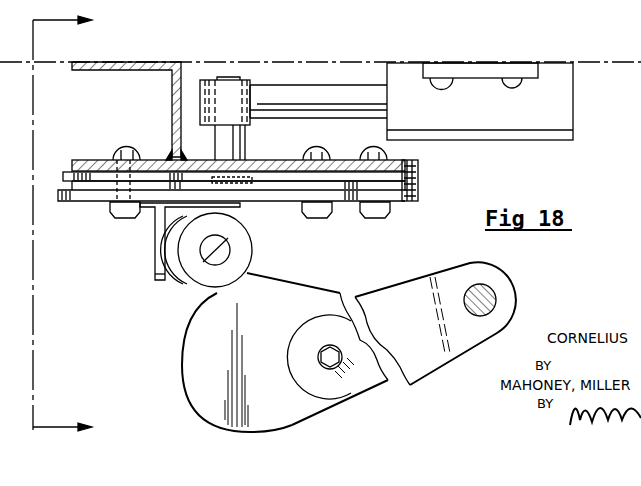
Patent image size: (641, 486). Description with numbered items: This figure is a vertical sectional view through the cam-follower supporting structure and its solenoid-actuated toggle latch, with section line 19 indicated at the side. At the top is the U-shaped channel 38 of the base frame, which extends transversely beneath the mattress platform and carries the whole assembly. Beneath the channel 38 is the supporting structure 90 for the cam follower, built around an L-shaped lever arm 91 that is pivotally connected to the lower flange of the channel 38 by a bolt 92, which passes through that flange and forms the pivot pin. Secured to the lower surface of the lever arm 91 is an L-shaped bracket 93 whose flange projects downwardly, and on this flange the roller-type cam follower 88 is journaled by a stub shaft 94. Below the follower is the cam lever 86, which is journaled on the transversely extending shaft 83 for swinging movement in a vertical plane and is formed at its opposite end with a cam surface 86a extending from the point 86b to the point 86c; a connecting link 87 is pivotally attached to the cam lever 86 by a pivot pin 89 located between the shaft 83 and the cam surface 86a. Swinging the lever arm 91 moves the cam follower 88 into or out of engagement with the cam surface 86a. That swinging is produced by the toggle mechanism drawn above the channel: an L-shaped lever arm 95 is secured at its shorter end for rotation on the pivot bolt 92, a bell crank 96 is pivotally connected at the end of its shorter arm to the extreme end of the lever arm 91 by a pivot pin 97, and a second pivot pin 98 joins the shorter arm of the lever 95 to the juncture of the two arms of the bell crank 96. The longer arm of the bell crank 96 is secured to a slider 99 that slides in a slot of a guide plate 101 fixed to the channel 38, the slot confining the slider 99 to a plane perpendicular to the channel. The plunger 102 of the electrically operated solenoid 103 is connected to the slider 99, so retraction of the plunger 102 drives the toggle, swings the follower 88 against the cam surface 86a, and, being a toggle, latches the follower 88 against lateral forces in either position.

The section line 19- 19 is at (73, 224).
The U-shaped channel 38 is at (102, 71).
The shaft 83 is at (495, 290).
The cam lever 86 is at (331, 351).
The cam surface 86a is at (183, 335).
The point 86b is at (247, 273).
The point 86c is at (322, 413).
The connecting link 87 is at (370, 377).
The cam follower 88 is at (193, 273).
The pivot pin 89 is at (322, 364).
The supporting structure 90 is at (136, 231).
The L-shaped lever arm 91 is at (343, 205).
The bolt 92 is at (117, 155).
The L-shaped bracket 93 is at (157, 256).
The stub shaft 94 is at (230, 248).
The L-shaped lever arm 95 is at (63, 183).
The bell crank 96 is at (418, 177).
The pivot pin 97 is at (405, 161).
The second pivot pin 98 is at (313, 153).
The slider 99 is at (246, 139).
The guide plate 101 is at (91, 156).
The plunger 102 is at (307, 90).
The solenoid 103 is at (563, 92).